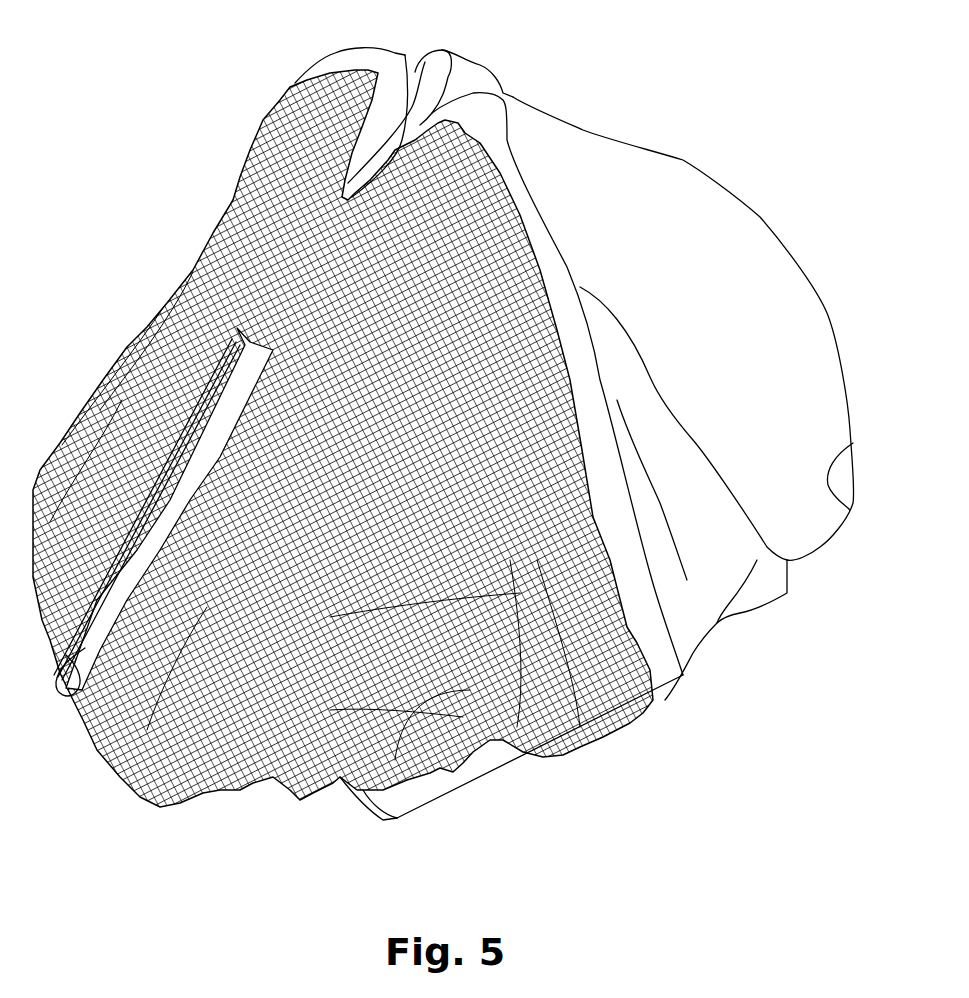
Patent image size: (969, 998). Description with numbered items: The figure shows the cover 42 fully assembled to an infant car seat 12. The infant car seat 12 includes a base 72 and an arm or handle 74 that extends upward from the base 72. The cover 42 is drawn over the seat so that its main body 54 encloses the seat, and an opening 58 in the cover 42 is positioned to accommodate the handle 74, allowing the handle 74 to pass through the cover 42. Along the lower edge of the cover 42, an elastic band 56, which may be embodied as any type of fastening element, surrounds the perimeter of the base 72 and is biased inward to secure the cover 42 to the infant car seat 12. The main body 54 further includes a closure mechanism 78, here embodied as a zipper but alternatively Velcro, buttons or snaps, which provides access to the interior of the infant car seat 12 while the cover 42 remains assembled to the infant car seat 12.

The infant car seat 12 is at (478, 778).
The cover 42 is at (678, 172).
The main body 54 is at (150, 340).
The elastic band 56 is at (733, 607).
The opening 58 is at (478, 72).
The base 72 is at (403, 817).
The handle 74 is at (437, 66).
The closure mechanism 78 is at (63, 686).